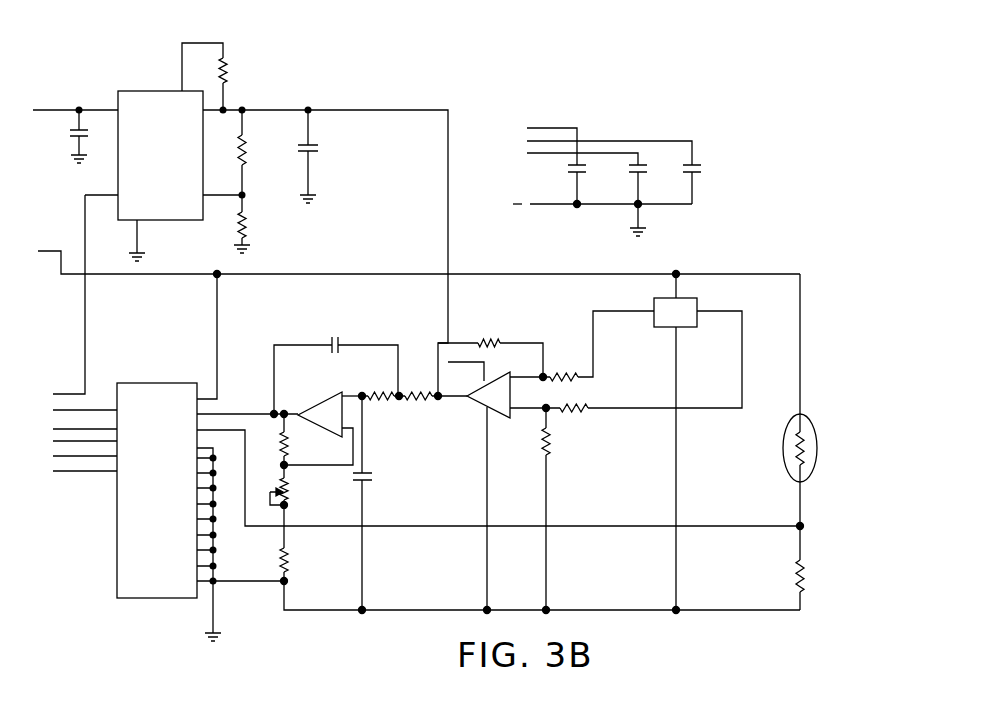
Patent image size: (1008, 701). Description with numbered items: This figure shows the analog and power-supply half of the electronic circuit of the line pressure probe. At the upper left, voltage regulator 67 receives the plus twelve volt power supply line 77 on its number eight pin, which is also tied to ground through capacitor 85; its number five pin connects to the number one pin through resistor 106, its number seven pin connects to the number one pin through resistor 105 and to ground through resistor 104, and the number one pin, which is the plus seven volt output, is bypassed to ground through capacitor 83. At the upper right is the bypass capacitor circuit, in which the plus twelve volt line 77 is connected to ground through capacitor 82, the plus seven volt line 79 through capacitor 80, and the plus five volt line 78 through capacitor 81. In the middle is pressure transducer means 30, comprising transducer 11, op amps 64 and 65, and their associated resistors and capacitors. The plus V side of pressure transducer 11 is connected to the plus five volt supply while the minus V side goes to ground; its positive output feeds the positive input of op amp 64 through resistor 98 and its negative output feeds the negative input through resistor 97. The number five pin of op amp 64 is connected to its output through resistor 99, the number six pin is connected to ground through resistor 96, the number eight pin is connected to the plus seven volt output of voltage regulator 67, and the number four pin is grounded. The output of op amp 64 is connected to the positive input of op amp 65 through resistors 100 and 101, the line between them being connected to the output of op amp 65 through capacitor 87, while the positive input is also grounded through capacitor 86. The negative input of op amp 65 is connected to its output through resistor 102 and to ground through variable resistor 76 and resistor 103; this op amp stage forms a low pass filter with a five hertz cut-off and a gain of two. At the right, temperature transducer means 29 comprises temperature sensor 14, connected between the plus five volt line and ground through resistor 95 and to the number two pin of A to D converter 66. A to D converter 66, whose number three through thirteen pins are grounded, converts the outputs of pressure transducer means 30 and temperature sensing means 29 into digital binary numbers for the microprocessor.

The voltage regulator 67 is at (145, 91).
The resistor 106 is at (226, 70).
The resistor 105 is at (239, 150).
The resistor 104 is at (246, 220).
The +12 volt power supply line 77 is at (55, 110).
The capacitor 85 is at (82, 136).
The capacitor 83 is at (310, 151).
The +7 volt line 79 is at (396, 110).
The +5 volt power line 78 is at (318, 274).
The capacitor 82 is at (572, 172).
The capacitor 81 is at (644, 172).
The capacitor 80 is at (700, 164).
The A to D converter 66 is at (138, 599).
The operational amplifier 65 is at (316, 398).
The capacitor 87 is at (340, 345).
The resistor 101 is at (381, 401).
The resistor 100 is at (426, 401).
The resistor 102 is at (289, 440).
The capacitor 86 is at (370, 479).
The variable resistor 76 is at (288, 497).
The resistor 103 is at (290, 562).
The operational amplifier 64 is at (510, 419).
The resistor 99 is at (494, 338).
The resistor 98 is at (566, 373).
The resistor 97 is at (589, 408).
The resistor 96 is at (550, 445).
The pressure transducer 11 is at (697, 322).
The pressure transducer means 30 is at (768, 323).
The temperature sensor 14 is at (827, 436).
The temperature transducer means 29 is at (818, 398).
The resistor 95 is at (804, 590).